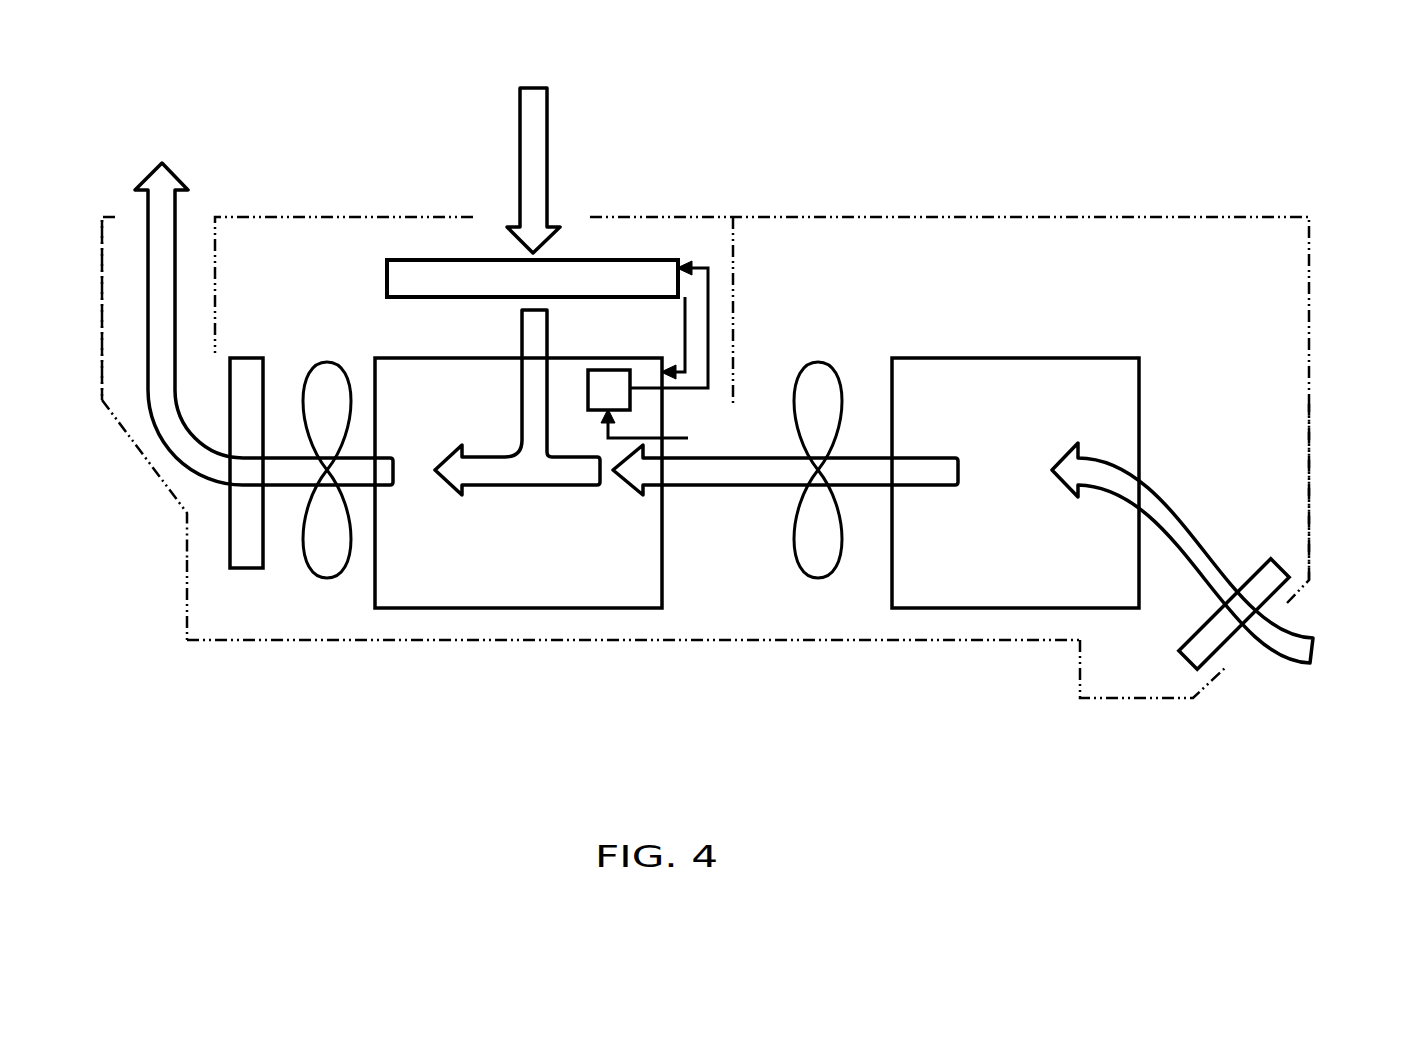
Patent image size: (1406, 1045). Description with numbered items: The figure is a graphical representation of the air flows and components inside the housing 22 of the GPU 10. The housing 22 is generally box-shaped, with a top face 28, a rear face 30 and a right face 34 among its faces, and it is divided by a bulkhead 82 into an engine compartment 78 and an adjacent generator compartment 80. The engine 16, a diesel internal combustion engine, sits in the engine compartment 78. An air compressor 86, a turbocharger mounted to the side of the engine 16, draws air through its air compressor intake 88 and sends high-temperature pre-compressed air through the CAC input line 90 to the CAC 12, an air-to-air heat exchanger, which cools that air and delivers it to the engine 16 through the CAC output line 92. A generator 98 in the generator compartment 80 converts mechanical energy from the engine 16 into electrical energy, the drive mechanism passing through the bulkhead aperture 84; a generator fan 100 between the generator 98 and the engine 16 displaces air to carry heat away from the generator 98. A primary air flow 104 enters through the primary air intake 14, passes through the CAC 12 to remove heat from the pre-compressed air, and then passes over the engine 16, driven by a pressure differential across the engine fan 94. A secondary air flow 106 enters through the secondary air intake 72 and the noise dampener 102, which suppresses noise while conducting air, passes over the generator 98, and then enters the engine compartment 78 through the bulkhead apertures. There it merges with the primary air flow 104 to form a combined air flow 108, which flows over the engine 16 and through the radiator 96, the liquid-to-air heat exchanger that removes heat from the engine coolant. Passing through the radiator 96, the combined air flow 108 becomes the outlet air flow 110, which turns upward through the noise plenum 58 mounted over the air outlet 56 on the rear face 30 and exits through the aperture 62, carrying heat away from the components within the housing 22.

The GPU 10 is at (288, 180).
The CAC 12 is at (617, 258).
The primary air intake 14 is at (493, 218).
The engine 16 is at (520, 608).
The housing 22 is at (187, 597).
The top face 28 is at (880, 217).
The rear face 30 is at (187, 558).
The right face 34 is at (1310, 400).
The air outlet 56 is at (217, 354).
The noise plenum 58 is at (102, 310).
The aperture 62 is at (197, 232).
The secondary air intake 72 is at (1242, 656).
The engine compartment 78 is at (673, 612).
The generator compartment 80 is at (856, 606).
The bulkhead 82 is at (735, 228).
The bulkhead aperture 84 is at (734, 408).
The air compressor 86 is at (608, 370).
The air compressor intake 88 is at (672, 443).
The CAC input line 90 is at (708, 318).
The CAC output line 92 is at (685, 328).
The engine fan 94 is at (327, 578).
The radiator 96 is at (247, 568).
The generator 98 is at (1017, 608).
The generator fan 100 is at (818, 362).
The noise dampener 102 is at (1273, 565).
The primary air flow 104 is at (547, 160).
The secondary air flow 106 is at (1297, 667).
The combined air flow 108 is at (532, 490).
The outlet air flow 110 is at (176, 180).